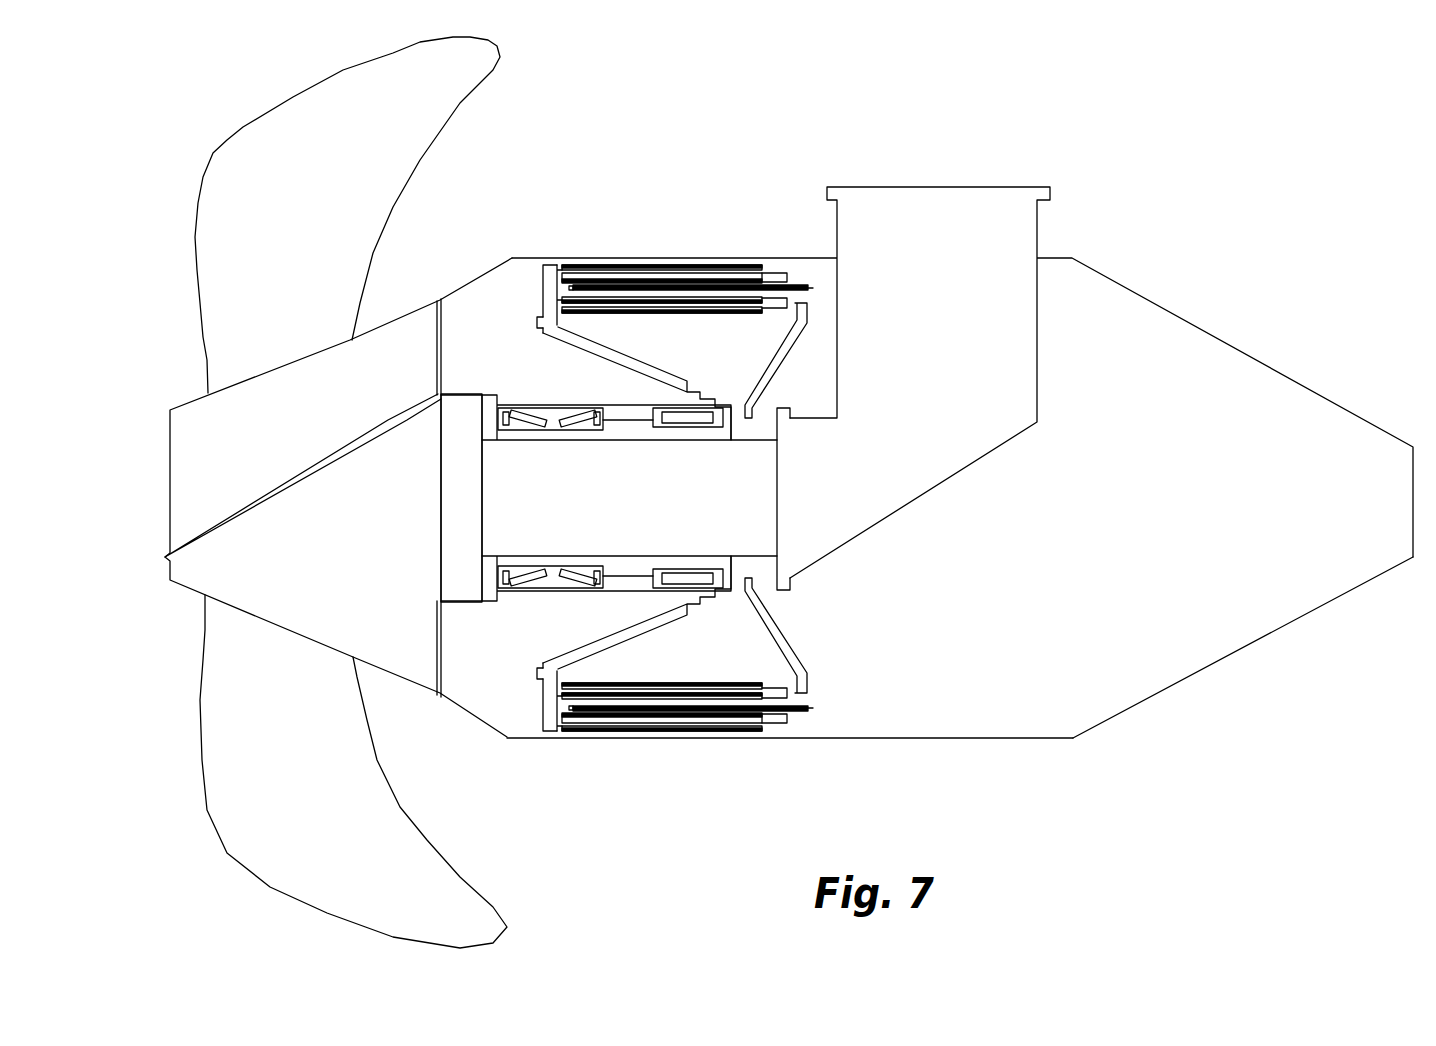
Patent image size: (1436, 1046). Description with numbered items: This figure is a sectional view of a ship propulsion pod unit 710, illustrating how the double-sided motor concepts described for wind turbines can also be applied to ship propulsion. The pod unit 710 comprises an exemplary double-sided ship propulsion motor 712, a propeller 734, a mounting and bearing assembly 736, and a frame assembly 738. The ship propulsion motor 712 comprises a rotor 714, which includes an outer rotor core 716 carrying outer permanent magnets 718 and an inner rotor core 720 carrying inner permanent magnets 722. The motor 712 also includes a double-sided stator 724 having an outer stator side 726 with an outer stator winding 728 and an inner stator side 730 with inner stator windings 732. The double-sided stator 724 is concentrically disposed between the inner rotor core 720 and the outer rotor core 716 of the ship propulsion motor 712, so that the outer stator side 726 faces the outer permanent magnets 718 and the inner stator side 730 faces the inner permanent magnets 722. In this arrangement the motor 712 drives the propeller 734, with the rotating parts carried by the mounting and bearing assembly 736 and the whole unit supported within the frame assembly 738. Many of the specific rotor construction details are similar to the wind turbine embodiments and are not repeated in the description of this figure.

The ship propulsion pod unit 710 is at (960, 435).
The double-sided ship propulsion motor 712 is at (714, 239).
The rotor 714 is at (540, 292).
The outer rotor core 716 is at (567, 267).
The outer permanent magnets 718 is at (640, 268).
The inner rotor core 720 is at (563, 335).
The inner permanent magnets 722 is at (730, 312).
The double-sided stator 724 is at (547, 292).
The outer stator side 726 is at (583, 277).
The outer stator winding 728 is at (775, 273).
The inner stator side 730 is at (542, 303).
The inner stator windings 732 is at (815, 293).
The propeller 734 is at (460, 82).
The mounting and bearing assembly 736 is at (460, 303).
The frame assembly 738 is at (1217, 643).